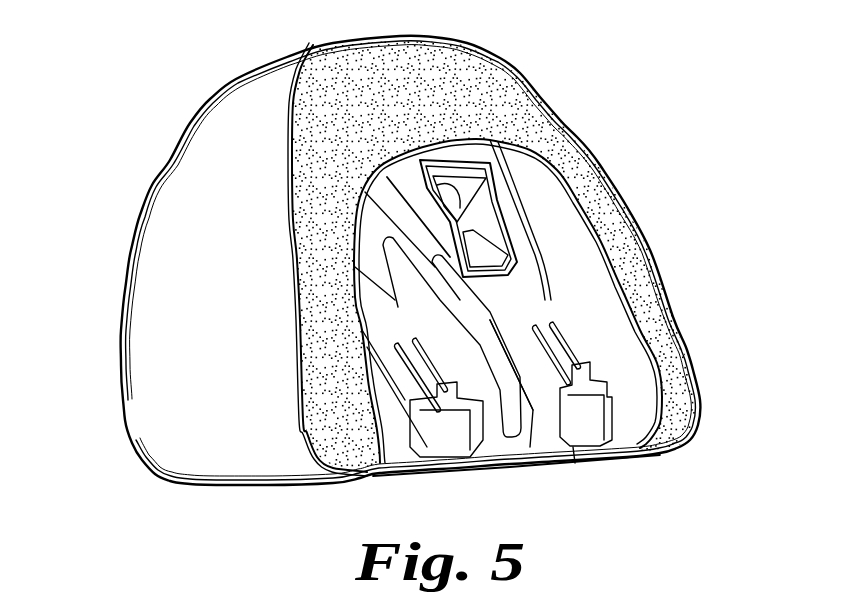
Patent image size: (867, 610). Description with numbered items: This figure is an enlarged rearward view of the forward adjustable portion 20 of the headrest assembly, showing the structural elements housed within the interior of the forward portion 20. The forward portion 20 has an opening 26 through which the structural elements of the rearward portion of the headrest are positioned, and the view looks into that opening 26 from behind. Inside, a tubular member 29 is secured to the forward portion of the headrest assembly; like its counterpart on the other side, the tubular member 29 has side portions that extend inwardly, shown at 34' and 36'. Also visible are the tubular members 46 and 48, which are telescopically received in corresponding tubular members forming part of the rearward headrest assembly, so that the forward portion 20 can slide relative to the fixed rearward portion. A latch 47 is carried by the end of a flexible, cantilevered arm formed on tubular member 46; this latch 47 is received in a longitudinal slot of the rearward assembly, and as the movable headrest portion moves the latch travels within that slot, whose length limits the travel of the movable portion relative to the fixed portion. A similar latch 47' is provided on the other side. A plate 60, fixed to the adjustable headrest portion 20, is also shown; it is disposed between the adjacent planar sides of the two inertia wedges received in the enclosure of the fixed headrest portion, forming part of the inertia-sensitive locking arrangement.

The forward adjustable portion 20 is at (168, 158).
The opening 26 is at (588, 203).
The tubular member 29 is at (445, 153).
The side portion 34' is at (486, 195).
The side portion 36' is at (417, 307).
The plate 60 is at (471, 349).
The latch 47 is at (436, 450).
The latch 47' is at (646, 380).
The tubular member 48 is at (480, 440).
The tubular member 46 is at (613, 387).